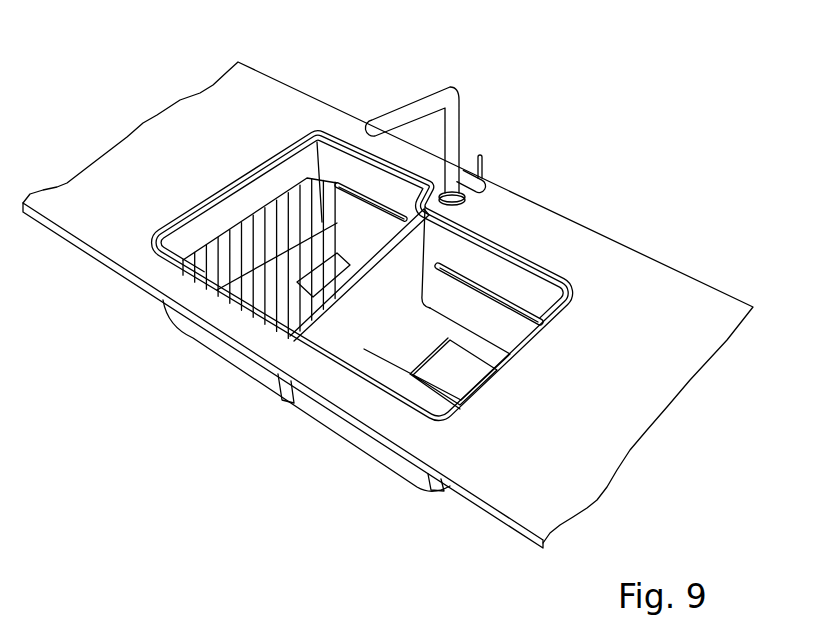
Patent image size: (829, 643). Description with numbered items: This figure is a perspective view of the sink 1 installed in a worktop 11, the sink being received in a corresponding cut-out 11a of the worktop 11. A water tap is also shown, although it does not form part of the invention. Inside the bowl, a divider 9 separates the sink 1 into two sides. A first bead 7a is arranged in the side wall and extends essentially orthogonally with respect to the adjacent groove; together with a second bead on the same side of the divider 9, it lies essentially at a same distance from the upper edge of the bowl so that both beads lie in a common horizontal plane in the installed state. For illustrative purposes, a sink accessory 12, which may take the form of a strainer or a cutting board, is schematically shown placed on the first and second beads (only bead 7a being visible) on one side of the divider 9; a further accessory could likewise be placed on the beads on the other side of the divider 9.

The sink 1 is at (375, 366).
The first bead 7a is at (340, 187).
The divider 9 is at (402, 258).
The worktop 11 is at (605, 180).
The cut-out 11a is at (393, 406).
The sink accessory 12 is at (272, 213).